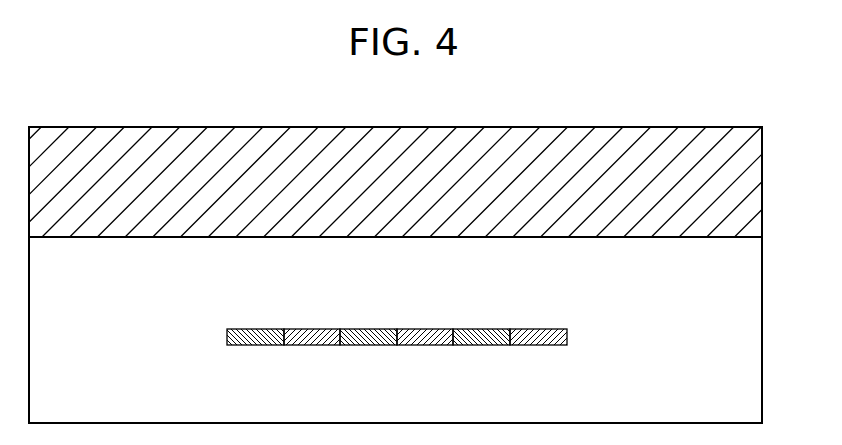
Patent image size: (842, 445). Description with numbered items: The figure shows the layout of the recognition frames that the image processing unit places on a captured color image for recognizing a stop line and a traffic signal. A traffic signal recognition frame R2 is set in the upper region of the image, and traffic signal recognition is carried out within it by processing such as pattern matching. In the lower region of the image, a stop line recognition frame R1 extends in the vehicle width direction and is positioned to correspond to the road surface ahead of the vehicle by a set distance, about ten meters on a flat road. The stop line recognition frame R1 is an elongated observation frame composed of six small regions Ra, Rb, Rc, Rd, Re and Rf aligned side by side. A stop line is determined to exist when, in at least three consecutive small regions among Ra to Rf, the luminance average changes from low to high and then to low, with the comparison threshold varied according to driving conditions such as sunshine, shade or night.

The stop line recognition frame R1 is at (397, 374).
The traffic signal recognition frame R2 is at (762, 158).
The small region Ra is at (256, 346).
The small region Rb is at (312, 346).
The small region Rc is at (368, 346).
The small region Rd is at (425, 346).
The small region Re is at (482, 346).
The small region Rf is at (538, 358).